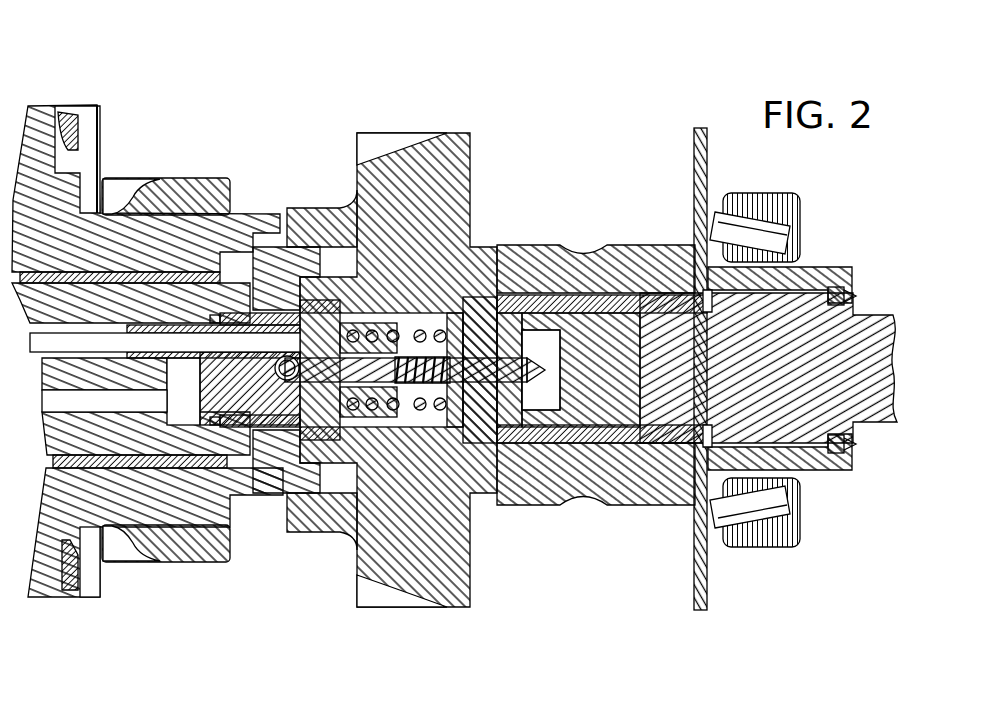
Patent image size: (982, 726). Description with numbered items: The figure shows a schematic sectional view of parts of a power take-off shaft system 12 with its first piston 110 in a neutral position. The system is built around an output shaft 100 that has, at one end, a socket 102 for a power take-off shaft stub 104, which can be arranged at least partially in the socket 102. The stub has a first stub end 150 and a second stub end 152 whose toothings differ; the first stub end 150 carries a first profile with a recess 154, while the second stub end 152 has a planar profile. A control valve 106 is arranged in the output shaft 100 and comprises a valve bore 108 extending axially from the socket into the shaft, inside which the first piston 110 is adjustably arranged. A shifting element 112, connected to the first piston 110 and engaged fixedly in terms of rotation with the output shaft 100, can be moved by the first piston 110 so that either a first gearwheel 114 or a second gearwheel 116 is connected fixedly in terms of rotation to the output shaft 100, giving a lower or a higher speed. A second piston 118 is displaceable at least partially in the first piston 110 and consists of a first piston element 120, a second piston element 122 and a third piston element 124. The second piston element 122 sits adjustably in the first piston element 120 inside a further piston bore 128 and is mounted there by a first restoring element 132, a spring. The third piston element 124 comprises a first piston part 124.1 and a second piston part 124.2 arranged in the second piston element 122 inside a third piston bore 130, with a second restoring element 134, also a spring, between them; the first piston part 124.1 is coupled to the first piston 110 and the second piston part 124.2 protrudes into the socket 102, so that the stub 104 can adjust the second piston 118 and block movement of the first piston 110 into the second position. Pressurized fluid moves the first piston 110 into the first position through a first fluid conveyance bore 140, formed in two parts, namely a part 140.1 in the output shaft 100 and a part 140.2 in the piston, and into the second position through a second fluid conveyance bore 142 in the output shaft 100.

The power take-off shaft system 12 is at (454, 350).
The output shaft 100 is at (658, 58).
The socket 102 is at (623, 293).
The power take-off shaft stub 104 is at (690, 300).
The control valve 106 is at (247, 296).
The valve bore 108 is at (437, 325).
The first piston 110 is at (233, 487).
The shifting element 112 is at (298, 255).
The first gearwheel 114 is at (425, 525).
The second gearwheel 116 is at (175, 497).
The second piston 118 is at (520, 470).
The first piston element 120 is at (380, 190).
The second piston element 122 is at (465, 340).
The third piston element 124 is at (480, 413).
The first piston part 124.1 is at (372, 415).
The second piston part 124.2 is at (427, 333).
The further piston bore 128 is at (402, 330).
The third piston bore 130 is at (545, 440).
The first restoring element 132 is at (337, 318).
The second restoring element 134 is at (478, 430).
The first fluid conveyance bore 140 is at (165, 223).
The part of the first fluid conveyance bore in the output shaft 140.1 is at (97, 343).
The part of the first fluid conveyance bore in the piston 140.2 is at (100, 397).
The second fluid conveyance bore 142 is at (128, 500).
The first stub end 150 is at (585, 365).
The second stub end 152 is at (697, 368).
The recess 154 is at (640, 560).